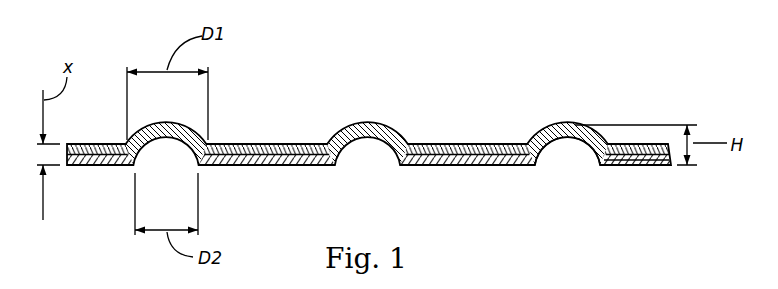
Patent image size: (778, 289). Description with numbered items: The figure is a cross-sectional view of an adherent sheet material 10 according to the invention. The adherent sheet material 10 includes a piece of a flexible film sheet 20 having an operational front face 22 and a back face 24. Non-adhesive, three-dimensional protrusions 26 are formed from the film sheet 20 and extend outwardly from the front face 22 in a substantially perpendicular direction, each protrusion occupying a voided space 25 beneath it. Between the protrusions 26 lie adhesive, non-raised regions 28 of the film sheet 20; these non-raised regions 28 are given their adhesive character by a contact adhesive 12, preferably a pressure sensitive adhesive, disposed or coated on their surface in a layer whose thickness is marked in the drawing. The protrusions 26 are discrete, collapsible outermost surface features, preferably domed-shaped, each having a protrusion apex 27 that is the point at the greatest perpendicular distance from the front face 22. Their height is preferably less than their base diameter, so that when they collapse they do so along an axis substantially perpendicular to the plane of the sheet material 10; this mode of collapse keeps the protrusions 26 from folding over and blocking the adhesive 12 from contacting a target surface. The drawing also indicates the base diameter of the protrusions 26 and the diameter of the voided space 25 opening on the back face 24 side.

The adherent sheet material 10 is at (447, 68).
The contact adhesive 12 is at (255, 143).
The flexible film sheet 20 is at (618, 166).
The operational front face 22 is at (469, 149).
The back face 24 is at (460, 167).
The voided space 25 is at (565, 170).
The protrusions 26 is at (350, 107).
The protrusion apex 27 is at (563, 125).
The non-raised regions 28 is at (445, 131).